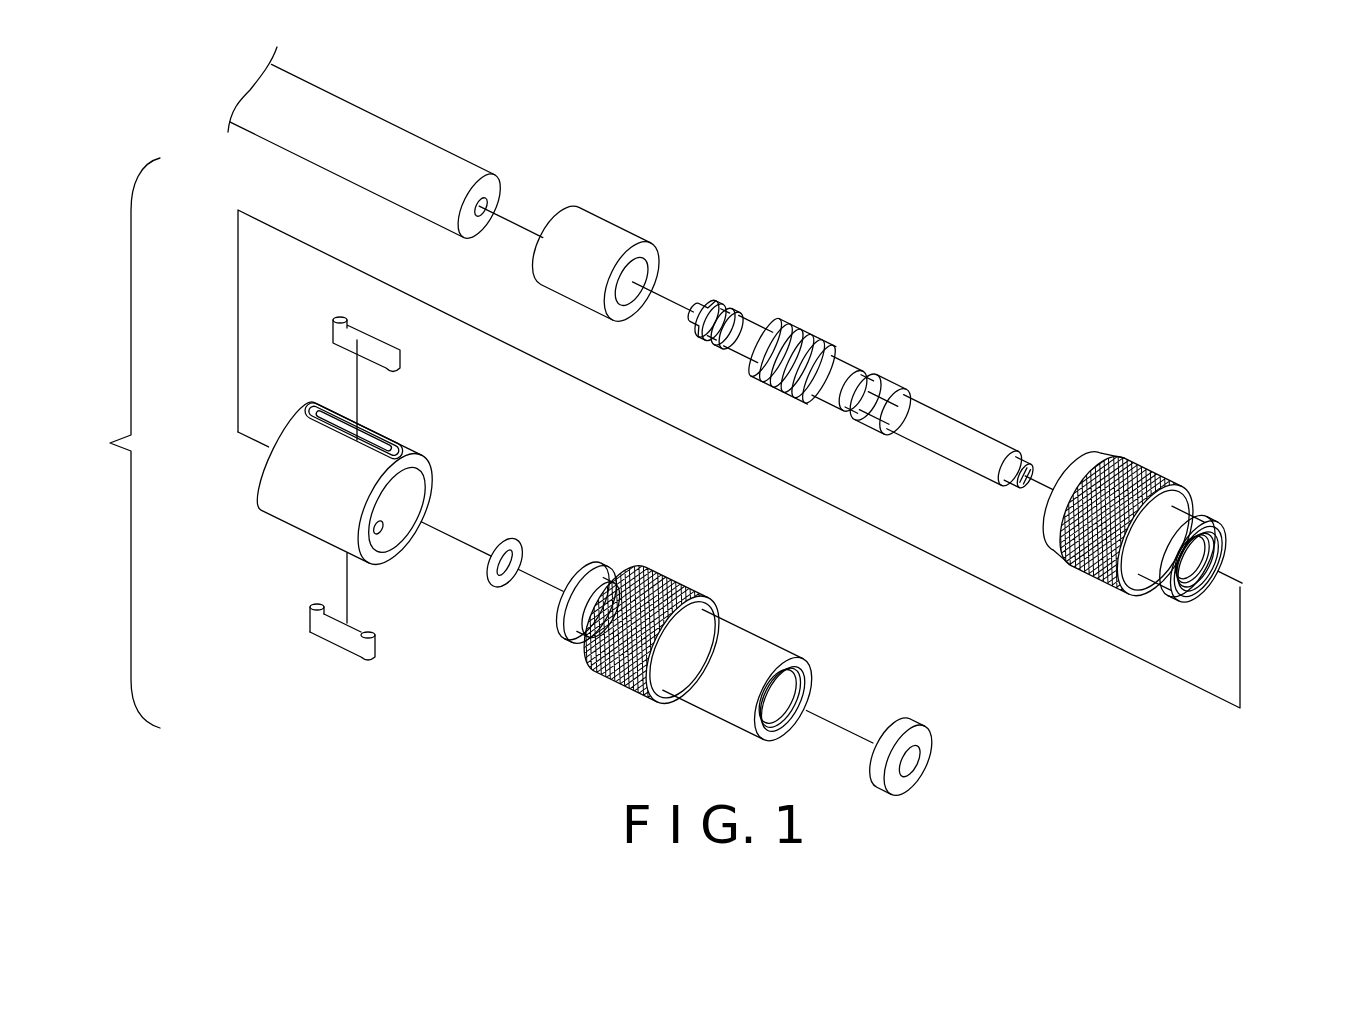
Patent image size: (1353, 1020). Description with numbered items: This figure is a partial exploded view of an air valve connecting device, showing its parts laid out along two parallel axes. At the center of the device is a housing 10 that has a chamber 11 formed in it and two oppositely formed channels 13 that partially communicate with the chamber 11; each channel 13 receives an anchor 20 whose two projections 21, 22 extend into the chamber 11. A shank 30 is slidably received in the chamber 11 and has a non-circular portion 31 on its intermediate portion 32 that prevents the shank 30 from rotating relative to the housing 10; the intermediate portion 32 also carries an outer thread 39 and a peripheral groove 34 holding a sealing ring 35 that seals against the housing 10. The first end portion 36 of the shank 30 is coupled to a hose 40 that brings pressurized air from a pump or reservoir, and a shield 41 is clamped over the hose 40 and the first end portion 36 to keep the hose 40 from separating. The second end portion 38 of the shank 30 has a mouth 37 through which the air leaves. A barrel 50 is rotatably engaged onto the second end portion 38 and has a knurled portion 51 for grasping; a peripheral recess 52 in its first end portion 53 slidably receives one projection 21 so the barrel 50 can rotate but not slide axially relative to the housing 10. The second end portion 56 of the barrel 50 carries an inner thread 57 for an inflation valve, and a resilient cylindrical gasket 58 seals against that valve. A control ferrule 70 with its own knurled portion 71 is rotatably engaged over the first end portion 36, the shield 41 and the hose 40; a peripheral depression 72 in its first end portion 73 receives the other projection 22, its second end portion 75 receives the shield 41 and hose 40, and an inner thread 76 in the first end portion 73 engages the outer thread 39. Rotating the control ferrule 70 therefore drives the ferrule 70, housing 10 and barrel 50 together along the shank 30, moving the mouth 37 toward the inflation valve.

The housing 10 is at (350, 499).
The chamber 11 is at (378, 527).
The channels 13 is at (353, 430).
The anchor 20 is at (340, 330).
The projection 21 is at (370, 633).
The projection 22 is at (318, 607).
The shank 30 is at (875, 386).
The non-circular portion 31 is at (848, 370).
The intermediate portion 32 is at (833, 400).
The peripheral groove 34 is at (897, 382).
The sealing ring 35 is at (510, 532).
The first end portion 36 is at (730, 318).
The mouth 37 is at (1023, 463).
The second end portion 38 is at (1012, 487).
The outer thread 39 is at (797, 340).
The hose 40 is at (410, 162).
The shield 41 is at (592, 250).
The barrel 50 is at (702, 624).
The knurled portion 51 is at (667, 573).
The peripheral recess 52 is at (597, 580).
The first end portion 53 is at (560, 622).
The second end portion 56 is at (737, 710).
The inner thread 57 is at (797, 693).
The cylindrical gasket 58 is at (902, 733).
The control ferrule 70 is at (1167, 515).
The knurled portion 71 is at (1126, 526).
The peripheral depression 72 is at (1171, 548).
The first end portion 73 is at (1192, 559).
The second end portion 75 is at (1075, 501).
The inner thread 76 is at (1196, 560).